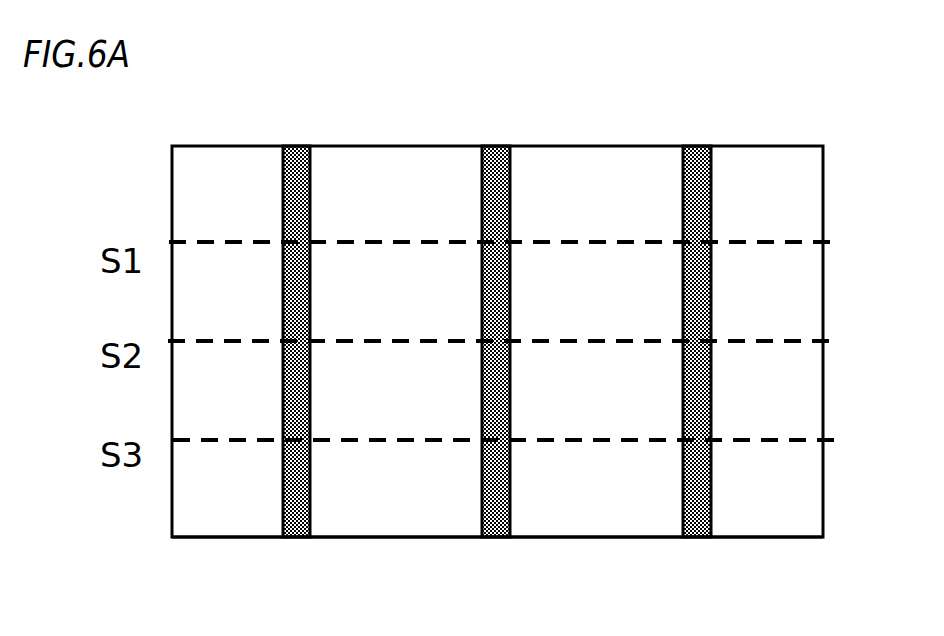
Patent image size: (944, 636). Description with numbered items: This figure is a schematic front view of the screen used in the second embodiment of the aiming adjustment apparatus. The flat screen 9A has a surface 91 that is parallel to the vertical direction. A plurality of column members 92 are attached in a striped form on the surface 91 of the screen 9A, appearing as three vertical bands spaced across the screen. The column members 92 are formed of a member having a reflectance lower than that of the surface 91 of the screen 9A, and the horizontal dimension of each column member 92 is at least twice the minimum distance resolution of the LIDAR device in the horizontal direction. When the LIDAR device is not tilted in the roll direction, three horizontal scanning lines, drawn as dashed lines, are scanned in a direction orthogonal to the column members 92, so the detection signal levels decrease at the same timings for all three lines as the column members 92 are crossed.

The screen 9A is at (650, 146).
The surface 91 is at (763, 503).
The column members 92 is at (682, 203).